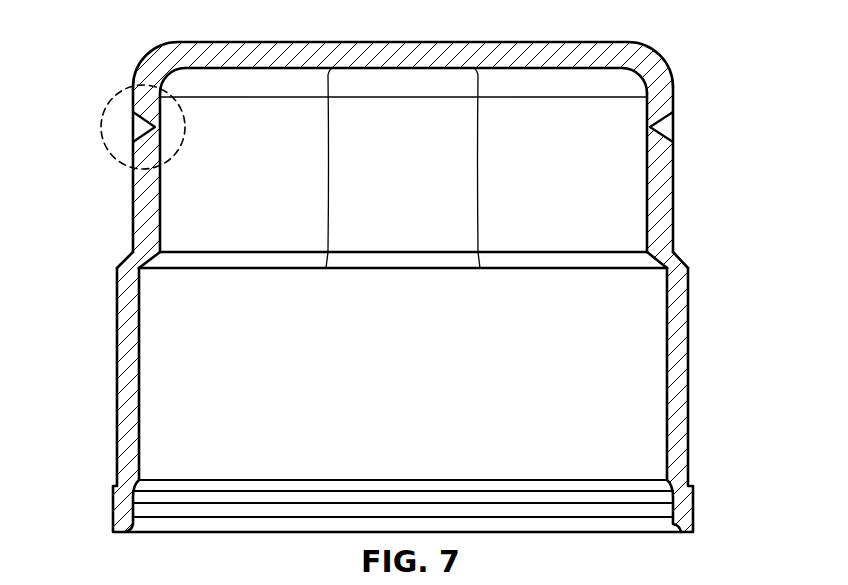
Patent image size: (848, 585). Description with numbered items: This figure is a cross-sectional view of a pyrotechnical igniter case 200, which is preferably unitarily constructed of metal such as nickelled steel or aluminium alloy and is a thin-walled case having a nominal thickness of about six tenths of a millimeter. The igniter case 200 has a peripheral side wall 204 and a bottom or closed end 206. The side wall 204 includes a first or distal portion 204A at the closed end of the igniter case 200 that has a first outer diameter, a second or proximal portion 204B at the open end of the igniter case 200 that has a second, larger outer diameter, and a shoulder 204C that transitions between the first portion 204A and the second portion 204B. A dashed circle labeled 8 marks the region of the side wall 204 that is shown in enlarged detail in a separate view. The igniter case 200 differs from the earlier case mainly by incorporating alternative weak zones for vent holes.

The igniter case 200 is at (744, 72).
The peripheral side wall 204 is at (682, 192).
The first portion 204A is at (133, 210).
The second portion 204B is at (688, 375).
The shoulder 204C is at (680, 257).
The closed end 206 is at (355, 42).
The detail region of FIG. 8 is at (100, 113).